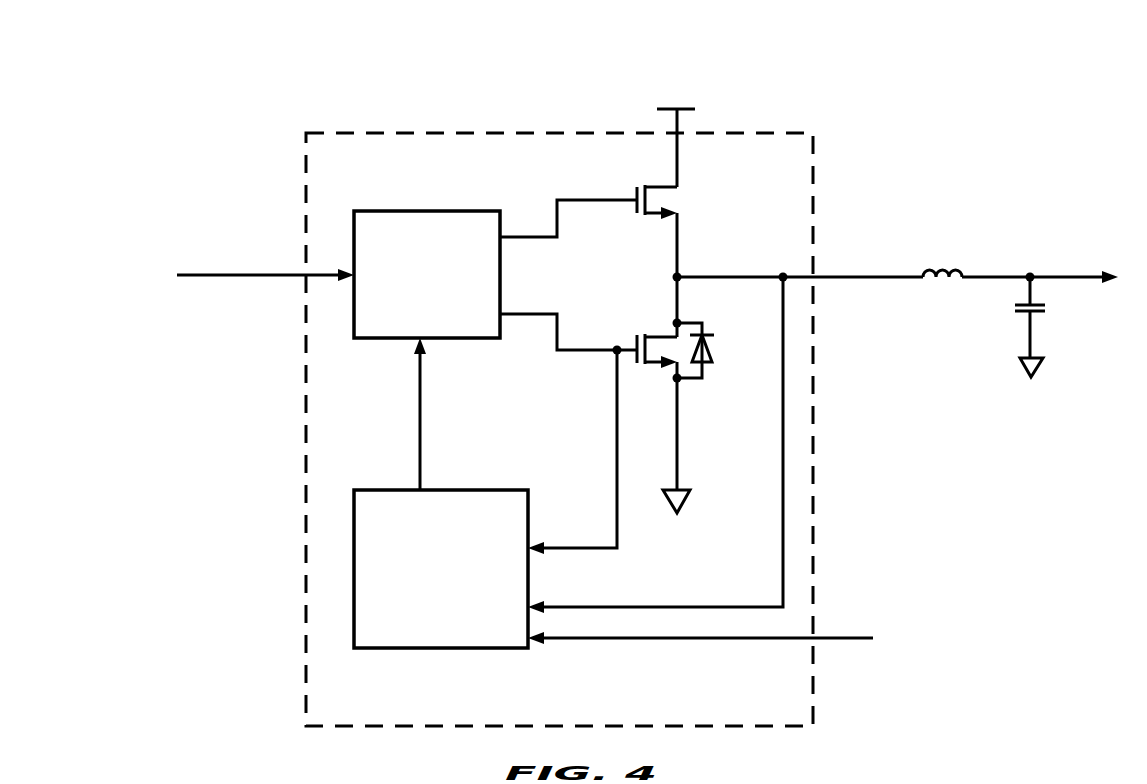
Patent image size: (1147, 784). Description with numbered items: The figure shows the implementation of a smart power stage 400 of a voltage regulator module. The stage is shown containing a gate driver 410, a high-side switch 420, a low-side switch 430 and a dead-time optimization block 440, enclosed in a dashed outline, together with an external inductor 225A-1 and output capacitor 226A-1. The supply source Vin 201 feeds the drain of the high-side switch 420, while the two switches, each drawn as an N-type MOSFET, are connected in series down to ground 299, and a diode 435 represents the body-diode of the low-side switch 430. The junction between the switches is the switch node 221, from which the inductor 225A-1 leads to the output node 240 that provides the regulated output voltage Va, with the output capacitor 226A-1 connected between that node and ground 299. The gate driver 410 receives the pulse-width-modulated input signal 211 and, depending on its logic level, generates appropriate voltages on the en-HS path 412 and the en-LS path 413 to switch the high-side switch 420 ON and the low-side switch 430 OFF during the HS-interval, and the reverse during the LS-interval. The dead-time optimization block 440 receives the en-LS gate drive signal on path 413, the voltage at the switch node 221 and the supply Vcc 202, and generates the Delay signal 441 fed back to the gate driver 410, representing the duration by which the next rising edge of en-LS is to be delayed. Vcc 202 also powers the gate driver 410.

The power converter circuit 400 is at (552, 66).
The input voltage Vin 201 is at (678, 110).
The high-side switch 420 is at (676, 187).
The low-side switch 430 is at (653, 337).
The diode 435 is at (728, 353).
The gate driver 410 is at (407, 314).
The dead-time optimization block 440 is at (420, 624).
The path en-HS 412 is at (580, 200).
The path en-LS 413 is at (557, 352).
The signal Delay 441 is at (475, 473).
The PWMA-1 211 is at (235, 274).
The node SWA-1 221 is at (855, 280).
The inductor 225A-1 is at (975, 237).
The output capacitor 226A-1 is at (1020, 311).
The node 240 is at (1098, 275).
The ground 299 is at (1024, 364).
The Vcc 202 is at (858, 641).